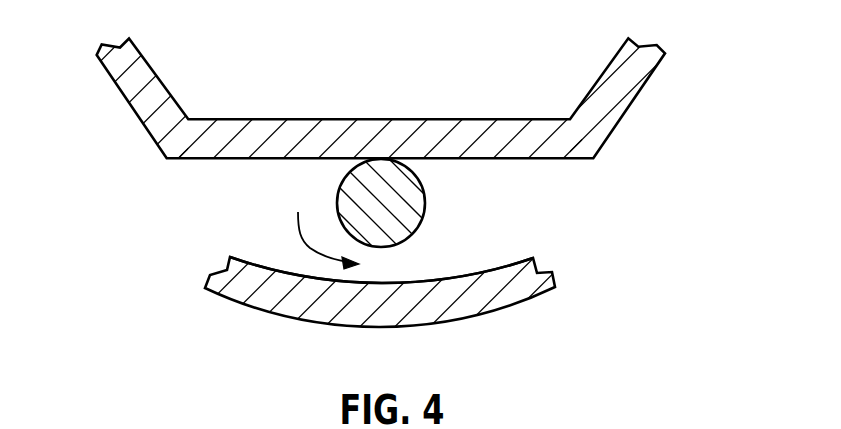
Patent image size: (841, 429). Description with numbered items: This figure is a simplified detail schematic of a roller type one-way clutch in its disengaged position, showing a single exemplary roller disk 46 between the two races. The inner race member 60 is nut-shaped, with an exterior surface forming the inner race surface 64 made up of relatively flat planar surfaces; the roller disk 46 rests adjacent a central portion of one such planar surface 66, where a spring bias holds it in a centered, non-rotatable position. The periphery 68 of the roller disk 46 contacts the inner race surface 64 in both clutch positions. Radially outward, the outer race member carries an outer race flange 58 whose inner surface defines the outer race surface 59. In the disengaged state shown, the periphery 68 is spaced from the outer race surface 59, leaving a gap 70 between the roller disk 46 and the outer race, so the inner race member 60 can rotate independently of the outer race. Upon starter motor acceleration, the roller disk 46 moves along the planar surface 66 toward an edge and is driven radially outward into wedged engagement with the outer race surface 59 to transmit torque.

The roller disk 46 is at (380, 188).
The outer race flange 58 is at (523, 284).
The outer race surface 59 is at (258, 260).
The inner race member 60 is at (618, 87).
The inner race surface 64 is at (136, 100).
The planar surface 66 is at (486, 160).
The periphery 68 is at (404, 228).
The gap 70 is at (320, 227).